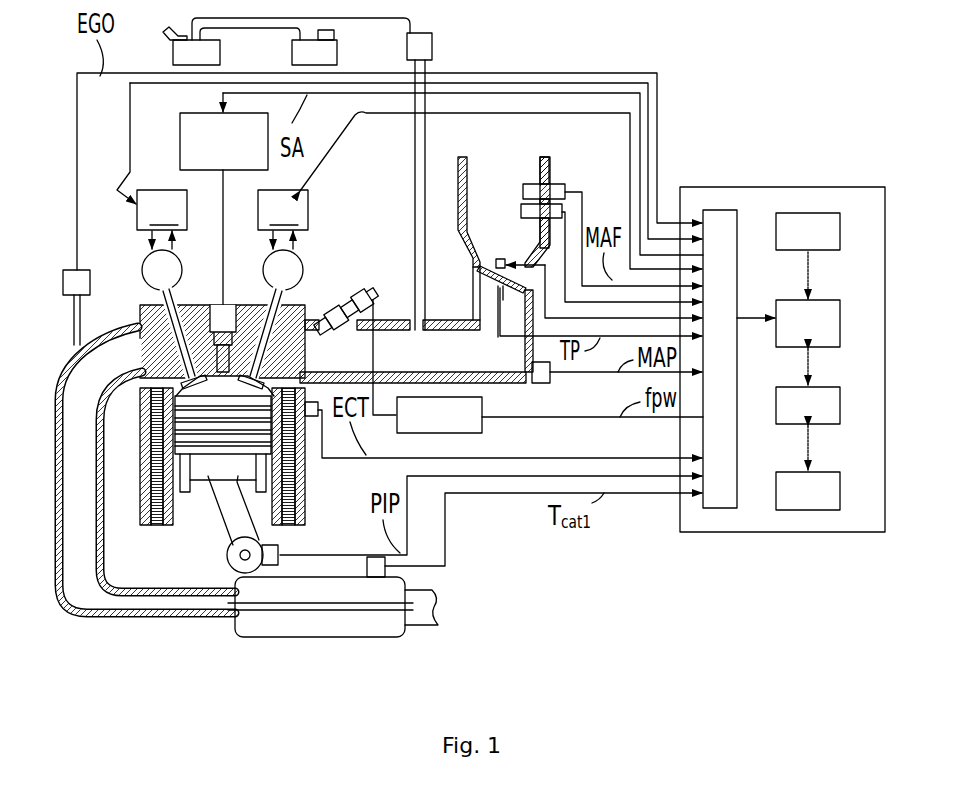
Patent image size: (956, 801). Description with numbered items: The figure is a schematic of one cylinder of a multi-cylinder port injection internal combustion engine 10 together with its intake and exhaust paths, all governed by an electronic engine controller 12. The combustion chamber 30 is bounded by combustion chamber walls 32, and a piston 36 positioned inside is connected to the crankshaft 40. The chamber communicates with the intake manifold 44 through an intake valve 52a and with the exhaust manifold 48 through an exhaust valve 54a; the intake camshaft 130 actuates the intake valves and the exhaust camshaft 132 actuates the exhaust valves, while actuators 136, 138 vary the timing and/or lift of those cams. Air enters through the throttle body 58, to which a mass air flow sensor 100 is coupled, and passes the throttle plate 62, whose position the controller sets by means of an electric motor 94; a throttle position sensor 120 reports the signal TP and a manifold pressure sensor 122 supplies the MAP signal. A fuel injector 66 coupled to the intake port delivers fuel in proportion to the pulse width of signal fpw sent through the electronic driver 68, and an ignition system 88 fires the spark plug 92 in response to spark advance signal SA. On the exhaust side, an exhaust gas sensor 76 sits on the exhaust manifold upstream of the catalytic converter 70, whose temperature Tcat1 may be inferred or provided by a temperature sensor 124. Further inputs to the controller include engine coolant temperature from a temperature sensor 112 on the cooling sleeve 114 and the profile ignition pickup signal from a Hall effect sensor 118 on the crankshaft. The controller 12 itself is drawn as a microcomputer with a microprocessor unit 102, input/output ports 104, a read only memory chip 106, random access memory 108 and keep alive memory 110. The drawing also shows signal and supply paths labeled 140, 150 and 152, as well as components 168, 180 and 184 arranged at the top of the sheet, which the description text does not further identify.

The port injection internal combustion engine 10 is at (314, 256).
The electronic engine controller 12 is at (780, 187).
The combustion chamber 30 is at (148, 440).
The combustion chamber walls 32 is at (170, 527).
The piston 36 is at (212, 485).
The crankshaft 40 is at (228, 560).
The intake manifold 44 is at (462, 362).
The exhaust manifold 48 is at (60, 386).
The intake valve 52a is at (246, 322).
The exhaust valve 54a is at (185, 376).
The throttle body 58 is at (483, 318).
The throttle plate 62 is at (476, 268).
The fuel injector 66 is at (355, 302).
The electronic driver 68 is at (482, 426).
The catalytic converter 70 is at (297, 580).
The exhaust gas sensor 76 is at (70, 268).
The ignition system 88 is at (193, 114).
The spark plug 92 is at (216, 322).
The electric motor 94 is at (497, 258).
The mass air flow sensor 100 is at (565, 192).
The microprocessor unit 102 is at (840, 322).
The input/output ports 104 is at (738, 252).
The read only memory chip 106 is at (840, 233).
The random access memory 108 is at (840, 405).
The keep alive memory 110 is at (840, 492).
The temperature sensor 112 is at (391, 357).
The cooling sleeve 114 is at (300, 485).
The Hall effect sensor 118 is at (282, 550).
The throttle position sensor 120 is at (482, 282).
The manifold pressure sensor 122 is at (552, 376).
The temperature sensor 124 is at (370, 580).
The intake camshaft 130 is at (302, 265).
The exhaust camshaft 132 is at (142, 268).
The actuator 136 is at (283, 210).
The actuator 138 is at (162, 210).
The air flow sensor signal line 140 is at (520, 205).
The spark advance signal line 150 is at (330, 147).
The cam actuator signal line 152 is at (130, 125).
The fuel vapor canister 168 is at (432, 48).
The fuel tank 180 is at (220, 56).
The fuel pump 184 is at (337, 55).